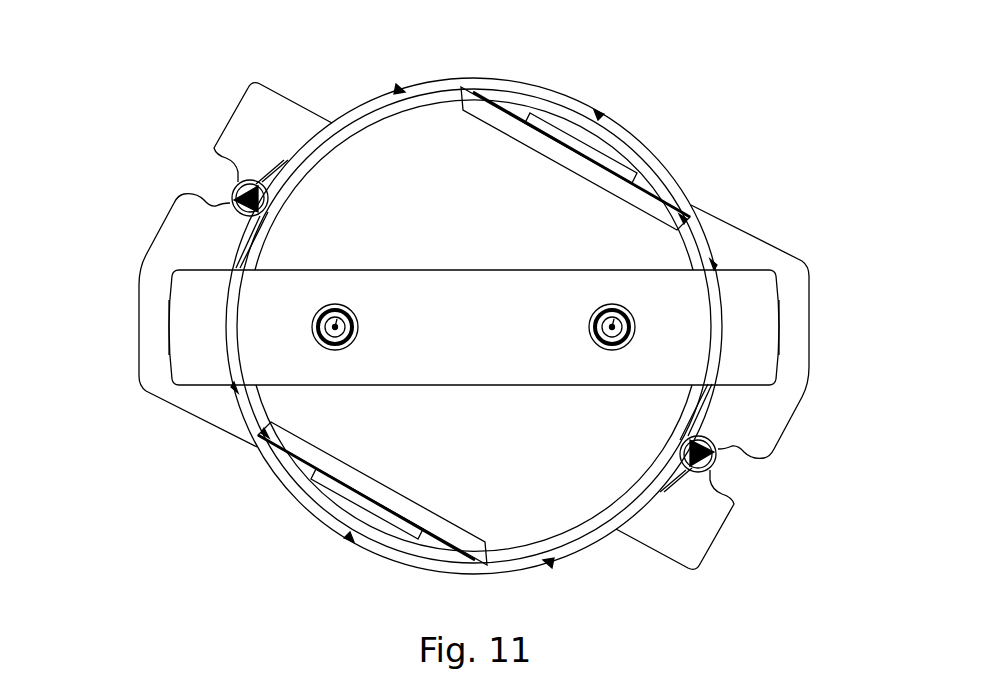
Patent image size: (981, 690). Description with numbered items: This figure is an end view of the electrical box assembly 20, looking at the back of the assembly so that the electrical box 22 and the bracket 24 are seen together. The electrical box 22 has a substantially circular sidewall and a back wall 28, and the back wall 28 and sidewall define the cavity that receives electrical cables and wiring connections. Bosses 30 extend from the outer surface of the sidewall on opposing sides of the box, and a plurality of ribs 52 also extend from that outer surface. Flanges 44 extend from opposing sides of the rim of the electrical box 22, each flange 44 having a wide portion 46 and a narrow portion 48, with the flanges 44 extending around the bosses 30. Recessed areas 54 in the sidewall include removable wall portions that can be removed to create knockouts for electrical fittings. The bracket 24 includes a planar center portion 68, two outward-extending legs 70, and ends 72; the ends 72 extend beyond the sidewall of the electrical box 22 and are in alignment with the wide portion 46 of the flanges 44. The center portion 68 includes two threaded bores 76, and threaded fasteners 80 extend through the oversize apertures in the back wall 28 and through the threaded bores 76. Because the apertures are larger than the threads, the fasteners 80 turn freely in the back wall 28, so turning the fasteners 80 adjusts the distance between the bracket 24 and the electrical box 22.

The electrical box assembly 20 is at (140, 122).
The electrical box 22 is at (640, 124).
The bracket 24 is at (748, 268).
The back wall 28 is at (450, 241).
The boss 30 is at (228, 201).
The flange 44 is at (137, 318).
The wide portion 46 is at (183, 253).
The narrow portion 48 is at (246, 141).
The rib 52 is at (400, 88).
The recessed area 54 is at (575, 126).
The center portion 68 is at (458, 343).
The leg 70 is at (180, 343).
The end 72 is at (168, 327).
The threaded bore 76 is at (337, 350).
The threaded fastener 80 is at (337, 304).